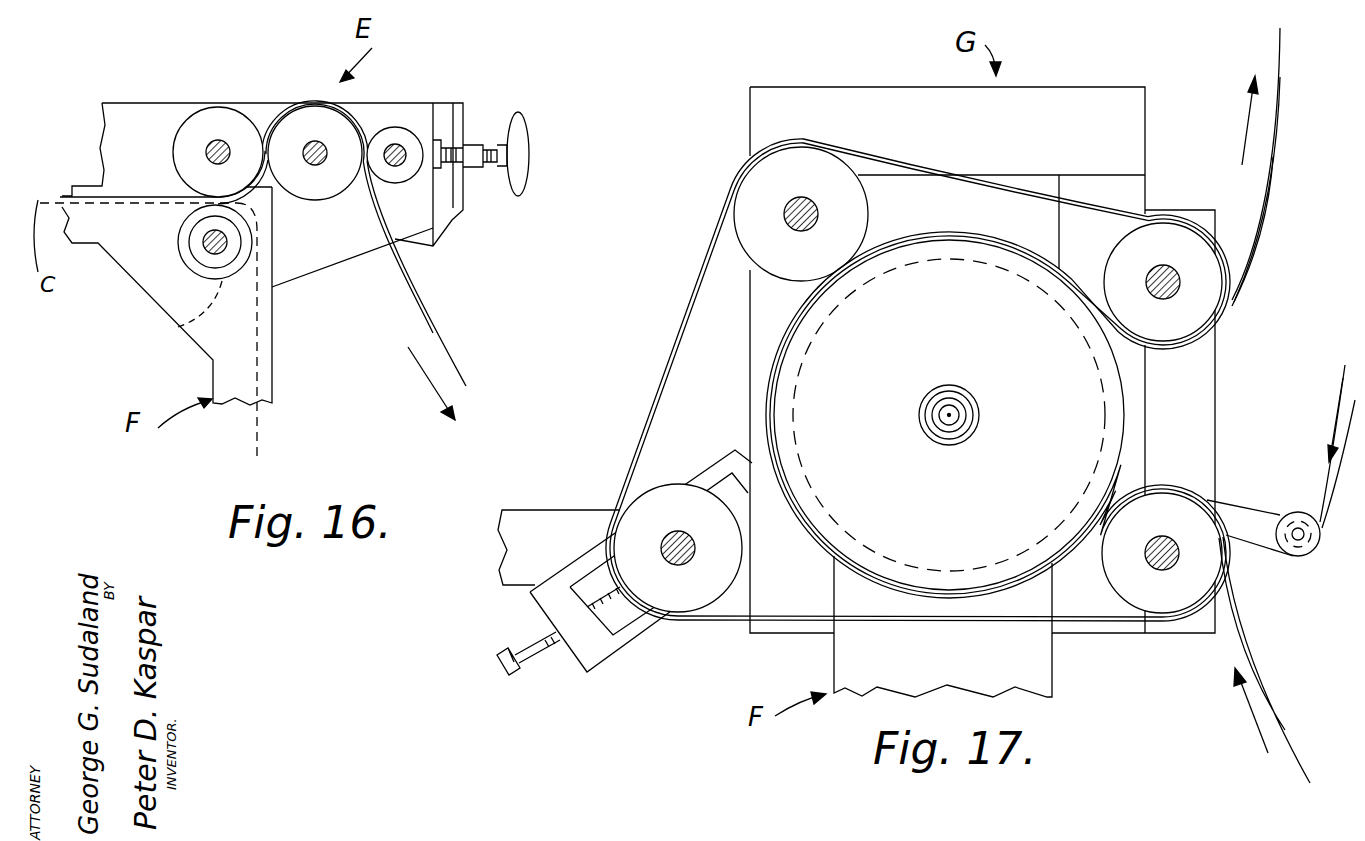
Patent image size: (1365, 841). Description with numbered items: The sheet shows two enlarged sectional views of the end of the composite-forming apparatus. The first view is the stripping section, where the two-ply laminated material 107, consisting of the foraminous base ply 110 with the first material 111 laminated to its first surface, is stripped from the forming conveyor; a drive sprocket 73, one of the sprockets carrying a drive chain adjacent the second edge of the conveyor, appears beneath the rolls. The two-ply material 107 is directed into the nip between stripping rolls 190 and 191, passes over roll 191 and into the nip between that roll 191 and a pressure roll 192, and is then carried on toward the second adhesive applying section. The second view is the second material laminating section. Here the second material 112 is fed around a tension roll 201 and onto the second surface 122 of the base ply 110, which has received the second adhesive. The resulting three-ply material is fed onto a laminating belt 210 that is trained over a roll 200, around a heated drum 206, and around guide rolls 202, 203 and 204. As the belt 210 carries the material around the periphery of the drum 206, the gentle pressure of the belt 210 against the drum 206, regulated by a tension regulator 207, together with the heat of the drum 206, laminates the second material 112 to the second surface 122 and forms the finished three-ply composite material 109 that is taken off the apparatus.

In FIG. 16, the drive sprockets 73 is at (178, 327).
In FIG. 16, the two-ply laminated material 107 is at (55, 192).
In FIG. 17, the two-ply laminated material 107 is at (1294, 744).
In FIG. 17, the three-ply composite material 109 is at (1281, 176).
In FIG. 16, the foraminous base ply 110 is at (455, 364).
In FIG. 17, the foraminous base ply 110 is at (1282, 82).
In FIG. 16, the first material 111 is at (440, 325).
In FIG. 17, the first material 111 is at (1276, 32).
In FIG. 17, the second material 112 is at (1272, 190).
In FIG. 17, the second surface 122 is at (1270, 689).
In FIG. 16, the stripping roll 190 is at (205, 122).
In FIG. 16, the stripping roll 191 is at (301, 188).
In FIG. 16, the pressure roll 192 is at (405, 132).
In FIG. 17, the roll 200 is at (1162, 602).
In FIG. 17, the tension roll 201 is at (1312, 552).
In FIG. 17, the guide roll 202 is at (1208, 295).
In FIG. 17, the guide roll 203 is at (762, 184).
In FIG. 17, the guide roll 204 is at (683, 601).
In FIG. 17, the heated drum 206 is at (1126, 390).
In FIG. 17, the tension regulator 207 is at (560, 656).
In FIG. 17, the laminating belt 210 is at (690, 318).